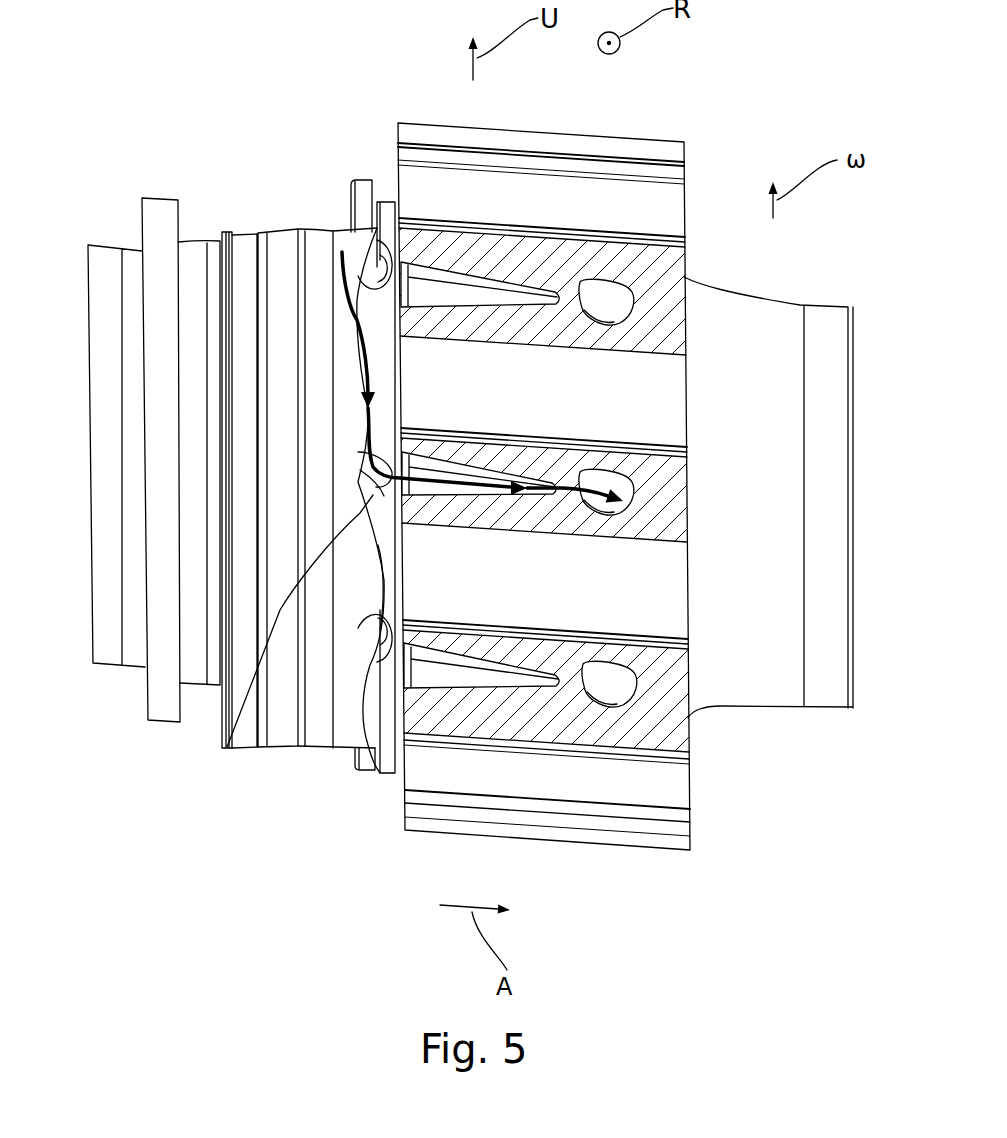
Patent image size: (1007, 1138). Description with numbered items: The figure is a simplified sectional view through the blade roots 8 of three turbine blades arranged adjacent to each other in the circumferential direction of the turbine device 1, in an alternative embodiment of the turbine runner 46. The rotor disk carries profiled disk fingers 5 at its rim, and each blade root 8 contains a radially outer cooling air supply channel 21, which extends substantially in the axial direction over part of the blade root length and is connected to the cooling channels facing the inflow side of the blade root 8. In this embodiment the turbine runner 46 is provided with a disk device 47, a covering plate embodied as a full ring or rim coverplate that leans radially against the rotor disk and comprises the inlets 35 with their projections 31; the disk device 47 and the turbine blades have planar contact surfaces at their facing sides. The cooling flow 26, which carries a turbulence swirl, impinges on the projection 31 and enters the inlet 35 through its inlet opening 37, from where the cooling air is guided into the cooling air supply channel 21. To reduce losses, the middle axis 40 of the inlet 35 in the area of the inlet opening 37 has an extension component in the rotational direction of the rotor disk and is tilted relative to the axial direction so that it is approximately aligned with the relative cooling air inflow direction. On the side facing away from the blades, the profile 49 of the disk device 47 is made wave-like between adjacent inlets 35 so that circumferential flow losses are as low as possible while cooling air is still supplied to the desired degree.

The turbine device 1 is at (167, 103).
The disk fingers 5 is at (657, 207).
The blade root 8 is at (568, 270).
The cooling air supply channel 21 is at (463, 267).
The cooling flow 26 is at (343, 313).
The projection 31 is at (228, 728).
The inlet 35 is at (363, 483).
The inlet opening 37 is at (358, 463).
The middle axis 40 is at (393, 198).
The turbine runner 46 is at (222, 431).
The disk device 47 is at (282, 232).
The profile 49 is at (377, 568).